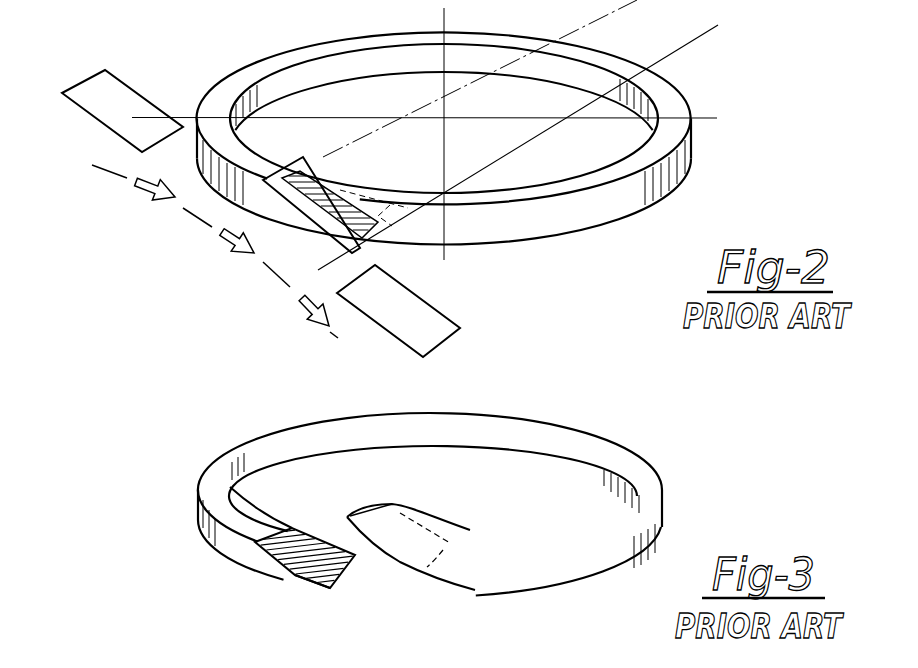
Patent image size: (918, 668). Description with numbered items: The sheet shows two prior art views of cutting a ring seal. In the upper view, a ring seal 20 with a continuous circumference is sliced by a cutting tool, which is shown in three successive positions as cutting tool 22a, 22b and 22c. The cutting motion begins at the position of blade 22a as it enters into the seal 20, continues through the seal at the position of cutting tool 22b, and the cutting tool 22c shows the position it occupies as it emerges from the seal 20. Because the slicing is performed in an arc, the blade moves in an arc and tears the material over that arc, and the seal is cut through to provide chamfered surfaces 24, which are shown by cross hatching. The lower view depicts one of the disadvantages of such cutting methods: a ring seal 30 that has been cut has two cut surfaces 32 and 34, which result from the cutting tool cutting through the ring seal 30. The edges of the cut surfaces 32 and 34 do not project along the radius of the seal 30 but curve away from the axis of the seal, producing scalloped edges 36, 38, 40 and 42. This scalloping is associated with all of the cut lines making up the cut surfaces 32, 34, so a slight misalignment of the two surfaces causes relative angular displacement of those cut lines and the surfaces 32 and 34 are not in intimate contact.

In FIG. 2, the ring seal 20 is at (690, 158).
In FIG. 2, the cutting tool 22a is at (111, 129).
In FIG. 2, the cutting tool 22b is at (360, 250).
In FIG. 2, the cutting tool 22c is at (460, 330).
In FIG. 2, the chamfered surfaces 24 is at (353, 247).
In FIG. 3, the ring seal 30 is at (662, 496).
In FIG. 3, the cut surface 32 is at (300, 578).
In FIG. 3, the cut surface 34 is at (397, 562).
In FIG. 3, the scalloped edge 36 is at (258, 542).
In FIG. 3, the scalloped edge 38 is at (338, 588).
In FIG. 3, the scalloped edge 40 is at (360, 508).
In FIG. 3, the scalloped edge 42 is at (430, 556).